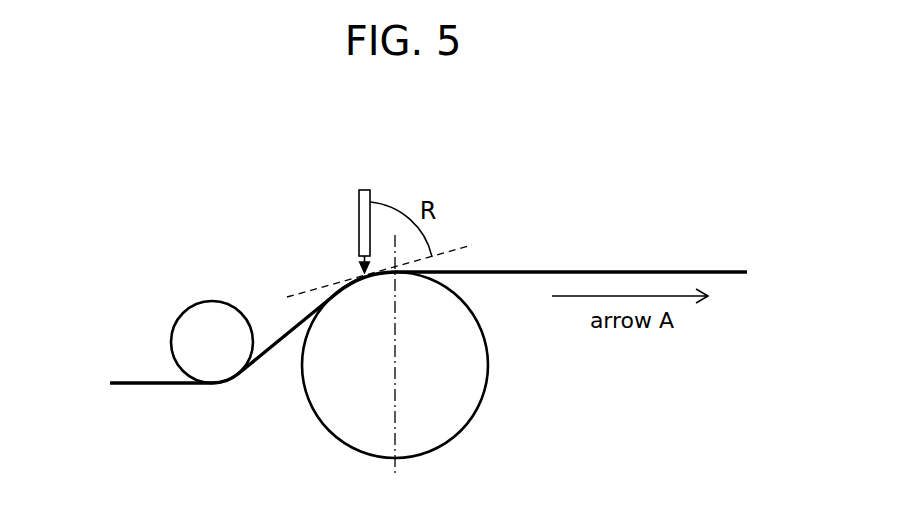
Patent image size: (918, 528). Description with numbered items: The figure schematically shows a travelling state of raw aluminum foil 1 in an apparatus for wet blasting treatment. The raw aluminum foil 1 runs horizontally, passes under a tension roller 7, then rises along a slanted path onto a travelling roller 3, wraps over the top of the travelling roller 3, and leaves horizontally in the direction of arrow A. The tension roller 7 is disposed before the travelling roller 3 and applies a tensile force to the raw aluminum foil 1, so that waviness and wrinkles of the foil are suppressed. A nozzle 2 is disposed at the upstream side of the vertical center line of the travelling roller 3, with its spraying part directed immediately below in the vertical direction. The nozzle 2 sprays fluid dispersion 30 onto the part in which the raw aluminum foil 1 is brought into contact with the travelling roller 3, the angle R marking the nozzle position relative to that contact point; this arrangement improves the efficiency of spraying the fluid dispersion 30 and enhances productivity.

The raw aluminum foil 1 is at (128, 382).
The nozzle 2 is at (361, 198).
The travelling roller 3 is at (345, 415).
The tension roller 7 is at (215, 315).
The fluid dispersion 30 is at (361, 268).